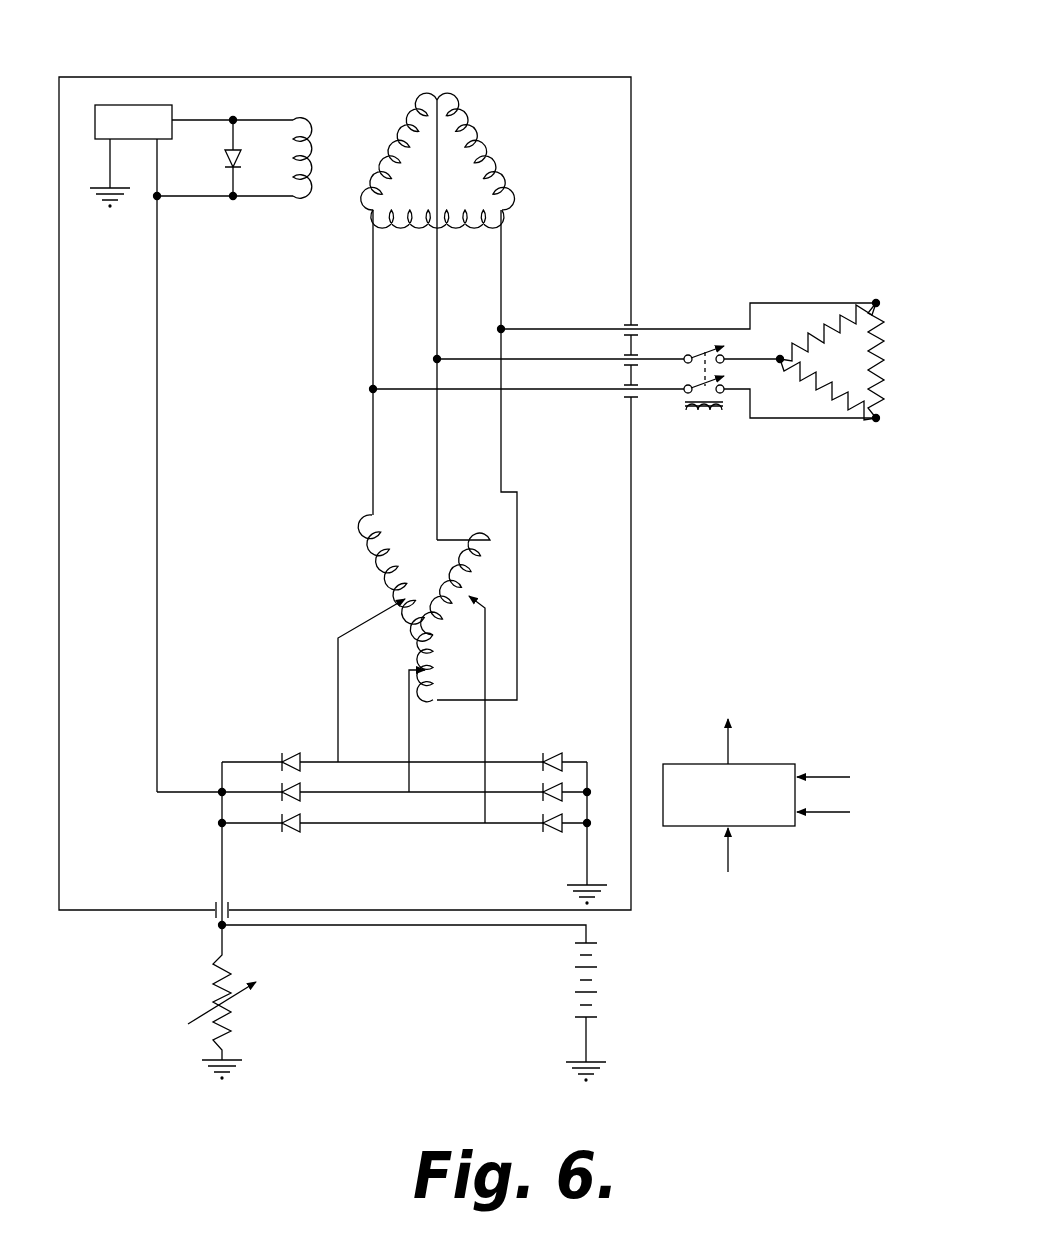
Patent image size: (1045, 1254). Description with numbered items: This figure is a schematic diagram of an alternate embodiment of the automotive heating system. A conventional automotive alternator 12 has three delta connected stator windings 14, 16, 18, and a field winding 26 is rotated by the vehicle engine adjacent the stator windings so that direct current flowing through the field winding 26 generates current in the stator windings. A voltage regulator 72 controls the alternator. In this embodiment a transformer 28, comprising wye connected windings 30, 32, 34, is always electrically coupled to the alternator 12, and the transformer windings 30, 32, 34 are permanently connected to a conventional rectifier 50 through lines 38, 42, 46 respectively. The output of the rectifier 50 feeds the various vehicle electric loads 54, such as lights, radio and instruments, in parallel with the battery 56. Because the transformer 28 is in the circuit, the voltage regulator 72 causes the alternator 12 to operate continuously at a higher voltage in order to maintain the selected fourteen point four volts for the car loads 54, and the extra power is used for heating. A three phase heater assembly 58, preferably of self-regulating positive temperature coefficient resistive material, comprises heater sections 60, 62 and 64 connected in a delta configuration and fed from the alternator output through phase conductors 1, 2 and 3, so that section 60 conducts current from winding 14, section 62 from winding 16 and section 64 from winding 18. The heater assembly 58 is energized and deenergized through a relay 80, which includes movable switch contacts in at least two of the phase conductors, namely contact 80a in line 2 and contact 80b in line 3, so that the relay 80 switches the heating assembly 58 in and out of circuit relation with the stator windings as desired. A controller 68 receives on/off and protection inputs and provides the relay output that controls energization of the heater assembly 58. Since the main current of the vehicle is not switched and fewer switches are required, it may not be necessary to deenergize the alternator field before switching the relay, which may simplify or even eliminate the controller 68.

The automotive alternator 12 is at (488, 50).
The stator winding 14 is at (478, 396).
The stator winding 16 is at (448, 218).
The stator winding 18 is at (420, 123).
The field winding 26 is at (300, 165).
The transformer 28 is at (330, 608).
The transformer winding 30 is at (430, 648).
The transformer winding 32 is at (468, 575).
The transformer winding 34 is at (370, 530).
The line 38 is at (408, 715).
The line 42 is at (490, 748).
The line 46 is at (338, 703).
The rectifier 50 is at (510, 826).
The vehicle electric loads 54 is at (230, 1025).
The battery 56 is at (575, 996).
The three phase heater assembly 58 is at (833, 361).
The heater section 60 is at (812, 330).
The heater section 62 is at (888, 368).
The heater section 64 is at (842, 400).
The controller 68 is at (741, 824).
The voltage regulator 72 is at (100, 140).
The relay 80 is at (702, 374).
The movable switch contact 80a is at (688, 385).
The movable switch contact 80b is at (702, 350).
The conductor 1 is at (752, 315).
The line 2 is at (780, 420).
The line 3 is at (756, 360).